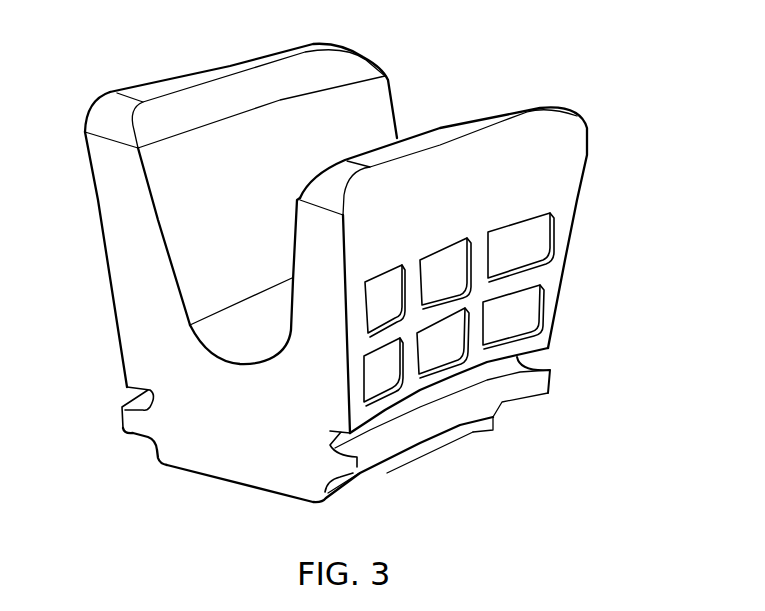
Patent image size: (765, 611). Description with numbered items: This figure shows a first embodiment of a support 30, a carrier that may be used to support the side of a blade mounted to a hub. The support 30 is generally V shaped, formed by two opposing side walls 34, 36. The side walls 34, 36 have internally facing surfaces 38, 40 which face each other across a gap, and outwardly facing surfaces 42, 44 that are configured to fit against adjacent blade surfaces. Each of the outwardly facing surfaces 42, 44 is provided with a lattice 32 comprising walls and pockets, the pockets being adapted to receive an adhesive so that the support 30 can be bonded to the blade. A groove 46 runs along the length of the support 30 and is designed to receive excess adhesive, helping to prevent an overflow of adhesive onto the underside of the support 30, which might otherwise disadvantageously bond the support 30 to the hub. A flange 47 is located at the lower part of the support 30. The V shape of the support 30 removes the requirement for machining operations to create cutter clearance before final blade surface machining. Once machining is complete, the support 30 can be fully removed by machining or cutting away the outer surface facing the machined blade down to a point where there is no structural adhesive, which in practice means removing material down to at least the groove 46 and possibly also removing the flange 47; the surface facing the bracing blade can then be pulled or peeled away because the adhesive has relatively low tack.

The support 30 is at (608, 72).
The lattice 32 is at (533, 278).
The side wall 34 is at (331, 304).
The side wall 36 is at (158, 277).
The internally facing surface 38 is at (375, 98).
The internally facing surface 40 is at (291, 252).
The outwardly facing surface 42 is at (558, 197).
The outwardly facing surface 44 is at (97, 203).
The groove 46 is at (533, 367).
The flange 47 is at (368, 472).